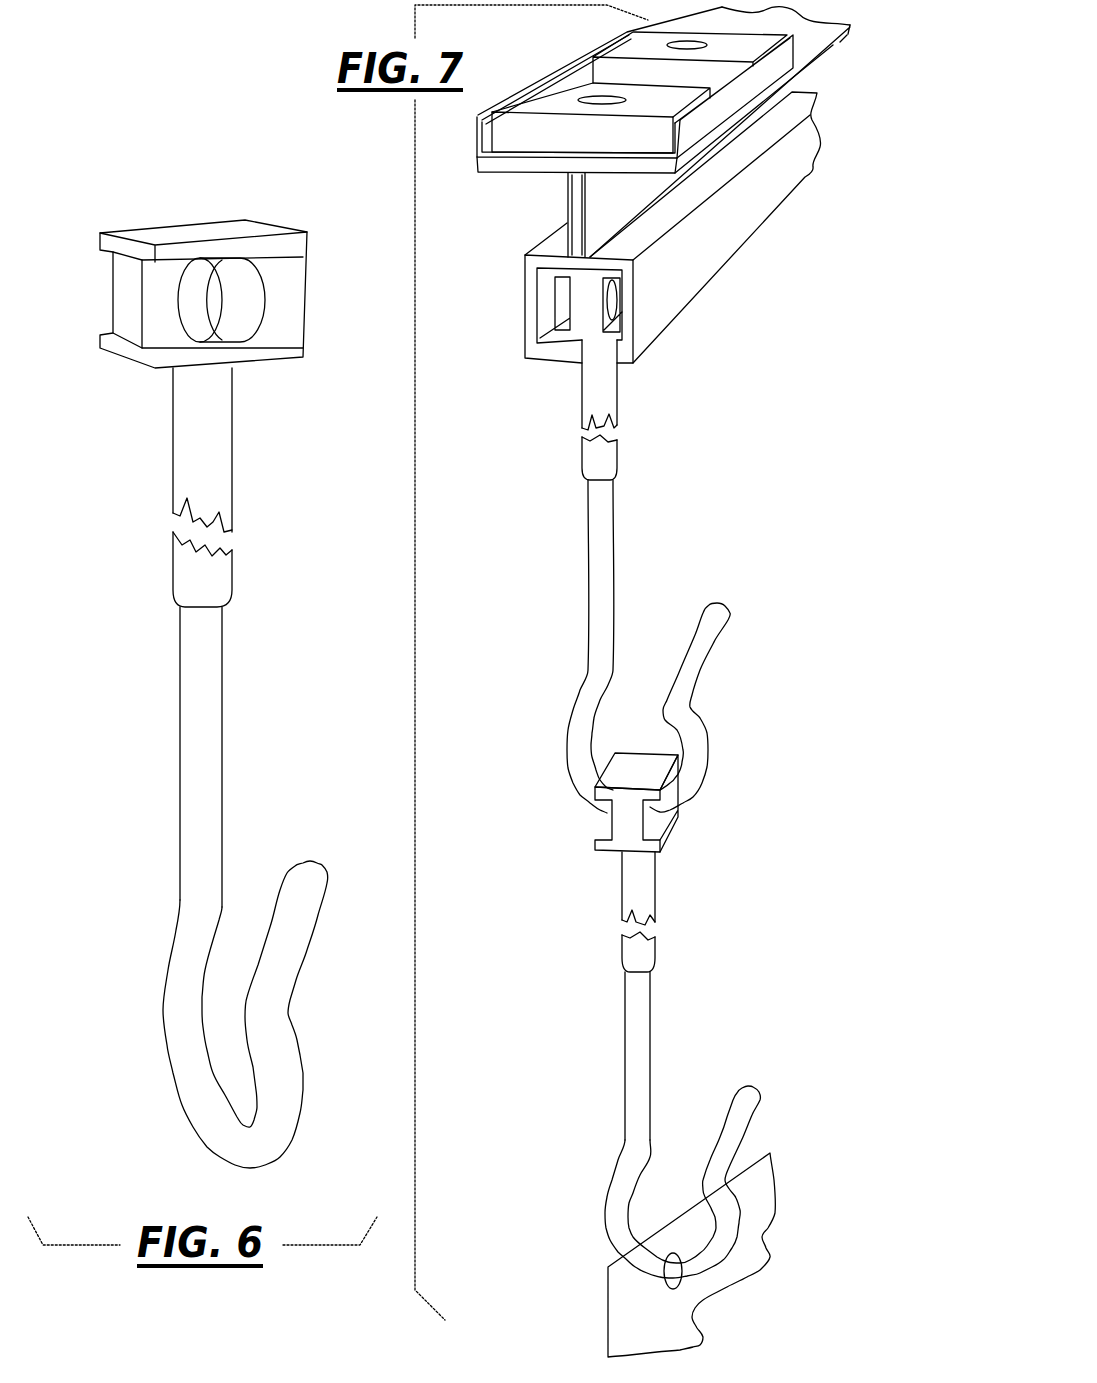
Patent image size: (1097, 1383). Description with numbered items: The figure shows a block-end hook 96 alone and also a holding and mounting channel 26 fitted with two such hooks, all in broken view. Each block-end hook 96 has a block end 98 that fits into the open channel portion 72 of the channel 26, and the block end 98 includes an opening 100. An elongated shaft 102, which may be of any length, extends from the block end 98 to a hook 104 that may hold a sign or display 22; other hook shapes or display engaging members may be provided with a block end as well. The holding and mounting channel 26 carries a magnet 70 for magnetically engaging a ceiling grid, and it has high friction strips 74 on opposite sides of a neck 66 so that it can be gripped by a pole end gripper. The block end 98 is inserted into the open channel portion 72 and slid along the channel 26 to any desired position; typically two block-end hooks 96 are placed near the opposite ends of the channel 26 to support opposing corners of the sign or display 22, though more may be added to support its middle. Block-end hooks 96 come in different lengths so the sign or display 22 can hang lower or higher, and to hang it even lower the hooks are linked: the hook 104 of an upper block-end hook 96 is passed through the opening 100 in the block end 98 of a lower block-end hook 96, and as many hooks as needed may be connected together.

In FIG. 7, the sign or display 22 is at (630, 1292).
In FIG. 7, the holding and mounting channel 26 is at (832, 50).
In FIG. 7, the neck 66 is at (575, 218).
In FIG. 7, the magnet 70 is at (622, 50).
In FIG. 7, the open channel portion 72 is at (667, 298).
In FIG. 7, the high friction strips 74 is at (570, 190).
In FIG. 6, the block-end hook 96 is at (185, 705).
In FIG. 7, the block-end hook 96 is at (600, 547).
In FIG. 6, the block end 98 is at (263, 232).
In FIG. 7, the block end 98 is at (583, 303).
In FIG. 6, the opening 100 is at (198, 275).
In FIG. 7, the opening 100 is at (652, 818).
In FIG. 6, the elongated shaft 102 is at (192, 450).
In FIG. 6, the hook 104 is at (178, 1033).
In FIG. 7, the hook 104 is at (575, 705).